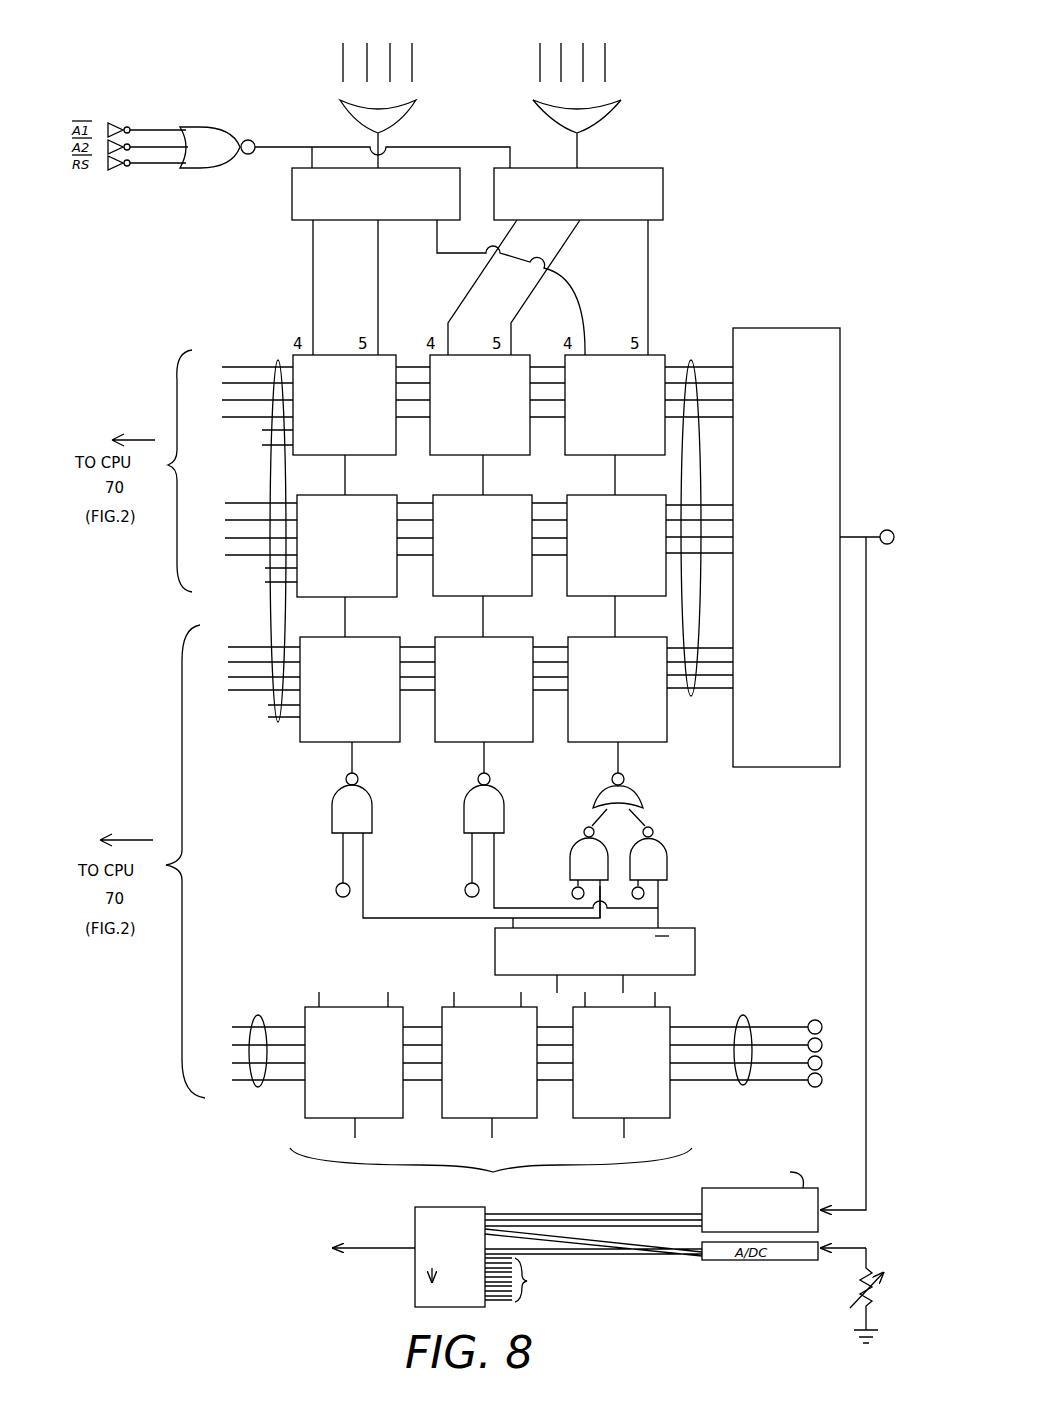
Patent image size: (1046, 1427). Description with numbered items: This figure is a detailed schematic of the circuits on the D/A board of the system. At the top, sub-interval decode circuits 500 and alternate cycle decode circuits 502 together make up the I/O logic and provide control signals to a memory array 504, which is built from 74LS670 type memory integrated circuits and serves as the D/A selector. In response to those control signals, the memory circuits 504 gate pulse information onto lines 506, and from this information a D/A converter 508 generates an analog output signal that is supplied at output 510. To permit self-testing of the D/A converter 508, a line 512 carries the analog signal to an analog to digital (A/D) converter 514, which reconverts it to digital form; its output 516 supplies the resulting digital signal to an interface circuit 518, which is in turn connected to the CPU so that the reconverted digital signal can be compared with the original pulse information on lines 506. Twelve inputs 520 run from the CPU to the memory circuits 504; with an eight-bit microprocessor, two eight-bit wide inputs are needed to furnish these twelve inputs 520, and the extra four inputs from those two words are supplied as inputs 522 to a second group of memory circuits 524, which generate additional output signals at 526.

The sub-interval decode circuits 500 is at (642, 106).
The alternate cycle decode circuits 502 is at (678, 887).
The memory array 504 is at (276, 330).
The lines 506 is at (691, 362).
The D/A converter 508 is at (826, 356).
The analog output 510 is at (887, 530).
The line 512 is at (866, 832).
The analog to digital (A/D) converter 514 is at (816, 1188).
The output 516 is at (662, 1196).
The interface circuit 518 is at (440, 1307).
The inputs 520 is at (278, 360).
The inputs 522 is at (262, 1016).
The second group of memory circuits 524 is at (290, 1102).
The additional output signals 526 is at (776, 1003).